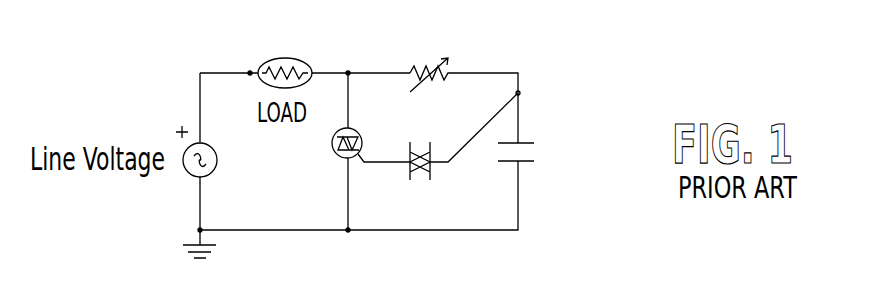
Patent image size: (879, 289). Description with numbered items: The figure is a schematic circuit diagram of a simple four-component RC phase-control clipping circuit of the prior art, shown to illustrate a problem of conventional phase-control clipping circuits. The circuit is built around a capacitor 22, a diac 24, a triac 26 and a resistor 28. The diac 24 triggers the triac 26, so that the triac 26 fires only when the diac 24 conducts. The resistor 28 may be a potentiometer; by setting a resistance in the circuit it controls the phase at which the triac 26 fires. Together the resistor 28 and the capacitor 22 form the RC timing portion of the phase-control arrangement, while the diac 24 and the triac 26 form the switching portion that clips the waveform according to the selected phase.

The capacitor 22 is at (527, 164).
The diac 24 is at (421, 182).
The triac 26 is at (336, 156).
The resistor 28 is at (453, 68).